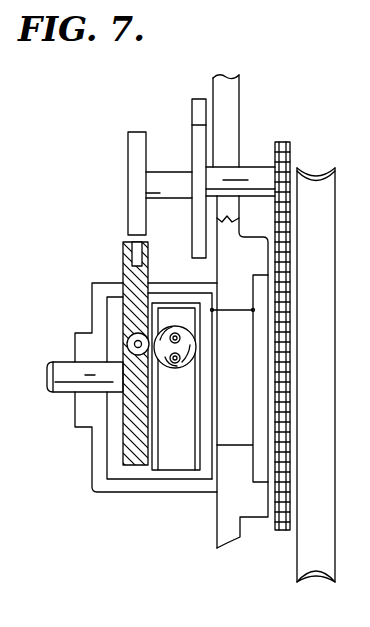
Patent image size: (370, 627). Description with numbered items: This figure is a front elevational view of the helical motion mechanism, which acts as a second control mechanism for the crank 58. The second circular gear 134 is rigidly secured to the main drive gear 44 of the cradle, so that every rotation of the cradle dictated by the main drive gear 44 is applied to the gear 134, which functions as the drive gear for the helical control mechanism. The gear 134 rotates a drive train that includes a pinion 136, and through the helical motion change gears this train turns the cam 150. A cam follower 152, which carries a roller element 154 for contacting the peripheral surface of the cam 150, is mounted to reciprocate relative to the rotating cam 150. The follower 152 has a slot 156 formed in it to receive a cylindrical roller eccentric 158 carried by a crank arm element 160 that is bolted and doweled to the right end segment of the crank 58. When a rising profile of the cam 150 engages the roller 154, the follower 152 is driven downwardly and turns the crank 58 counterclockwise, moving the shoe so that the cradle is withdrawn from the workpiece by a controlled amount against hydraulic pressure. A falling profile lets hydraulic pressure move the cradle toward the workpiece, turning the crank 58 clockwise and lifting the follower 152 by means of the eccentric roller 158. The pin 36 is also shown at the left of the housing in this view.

The pivot pin 36 is at (65, 397).
The main drive gear 44 is at (313, 168).
The crank 58 is at (213, 311).
The second circular gear 134 is at (288, 533).
The pinion 136 is at (283, 146).
The cam 150 is at (135, 155).
The cam follower 152 is at (125, 268).
The roller element 154 is at (125, 242).
The slot 156 is at (120, 365).
The cylindrical roller eccentric 158 is at (127, 340).
The crank arm element 160 is at (172, 372).